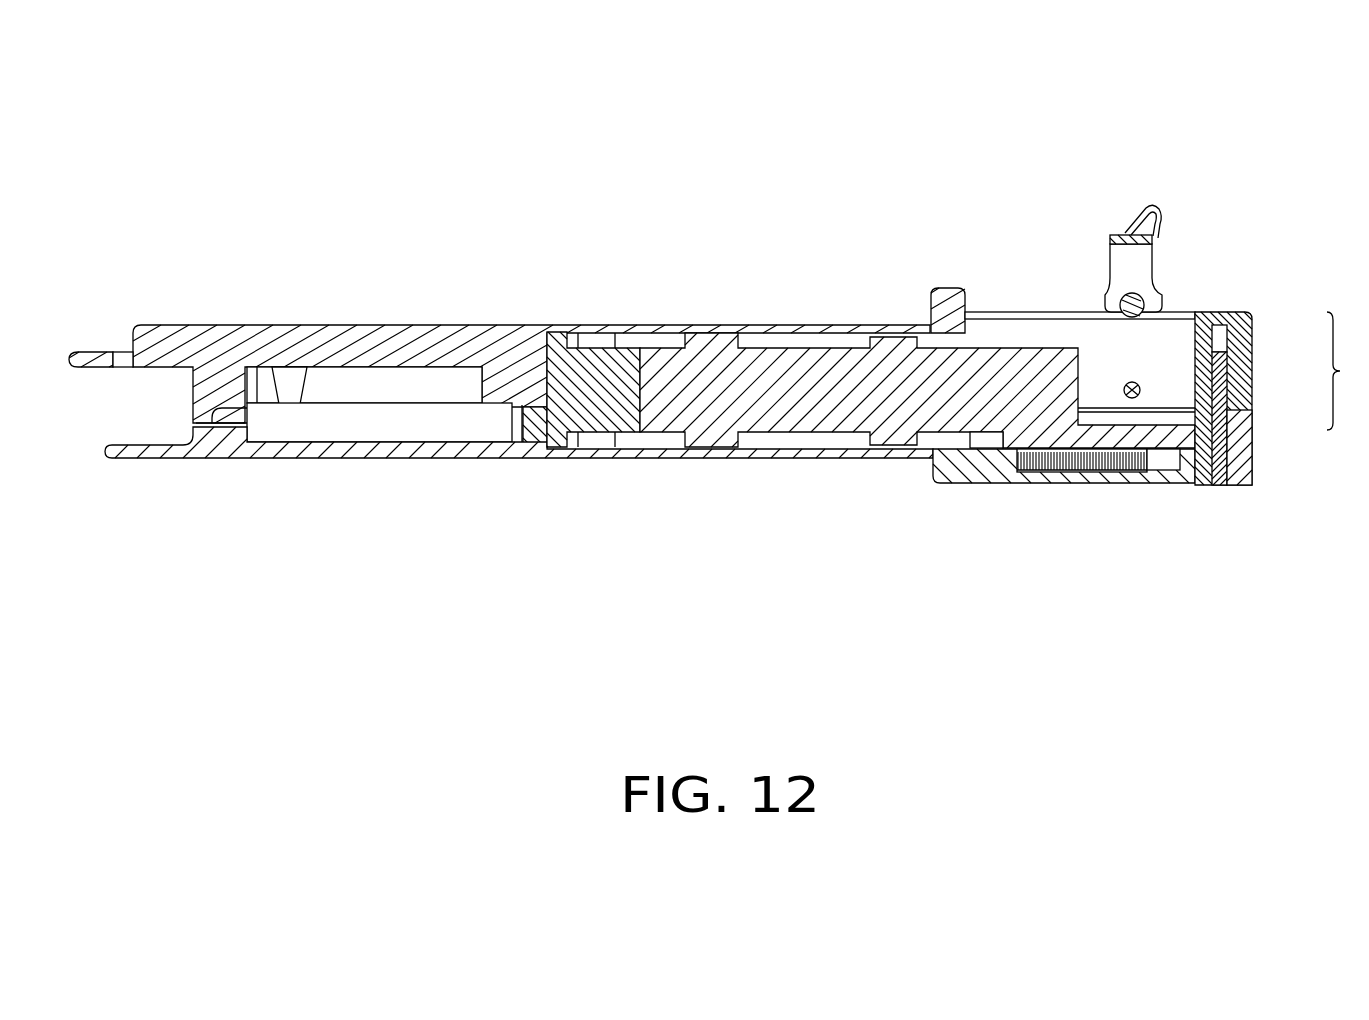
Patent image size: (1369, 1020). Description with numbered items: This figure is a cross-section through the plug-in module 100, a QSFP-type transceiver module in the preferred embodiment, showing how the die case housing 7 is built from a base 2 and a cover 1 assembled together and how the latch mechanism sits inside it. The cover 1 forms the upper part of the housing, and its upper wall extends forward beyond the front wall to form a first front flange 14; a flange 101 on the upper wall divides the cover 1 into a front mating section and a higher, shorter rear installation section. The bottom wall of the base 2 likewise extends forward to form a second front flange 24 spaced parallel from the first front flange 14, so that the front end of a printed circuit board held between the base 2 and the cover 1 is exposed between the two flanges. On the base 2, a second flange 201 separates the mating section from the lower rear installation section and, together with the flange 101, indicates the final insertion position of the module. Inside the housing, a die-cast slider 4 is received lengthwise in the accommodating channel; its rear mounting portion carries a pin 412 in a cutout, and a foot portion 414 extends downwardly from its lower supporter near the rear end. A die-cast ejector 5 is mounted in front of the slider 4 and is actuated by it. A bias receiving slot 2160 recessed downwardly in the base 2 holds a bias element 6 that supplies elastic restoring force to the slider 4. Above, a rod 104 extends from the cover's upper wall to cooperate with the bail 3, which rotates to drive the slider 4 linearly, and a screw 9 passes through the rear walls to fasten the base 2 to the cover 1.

The plug-in module 100 is at (678, 120).
The cover 1 is at (1240, 343).
The base 2 is at (1242, 432).
The bail 3 is at (1128, 262).
The slider 4 is at (802, 407).
The ejector 5 is at (575, 398).
The bias element 6 is at (1045, 468).
The die case housing 7 is at (1344, 371).
The screw 9 is at (1223, 432).
The first front flange 14 is at (100, 356).
The second front flange 24 is at (138, 452).
The flange 101 is at (950, 305).
The rod 104 is at (1100, 314).
The second flange 201 is at (937, 470).
The pin 412 is at (1136, 386).
The foot portion 414 is at (1162, 458).
The bias receiving slot 2160 is at (1100, 471).